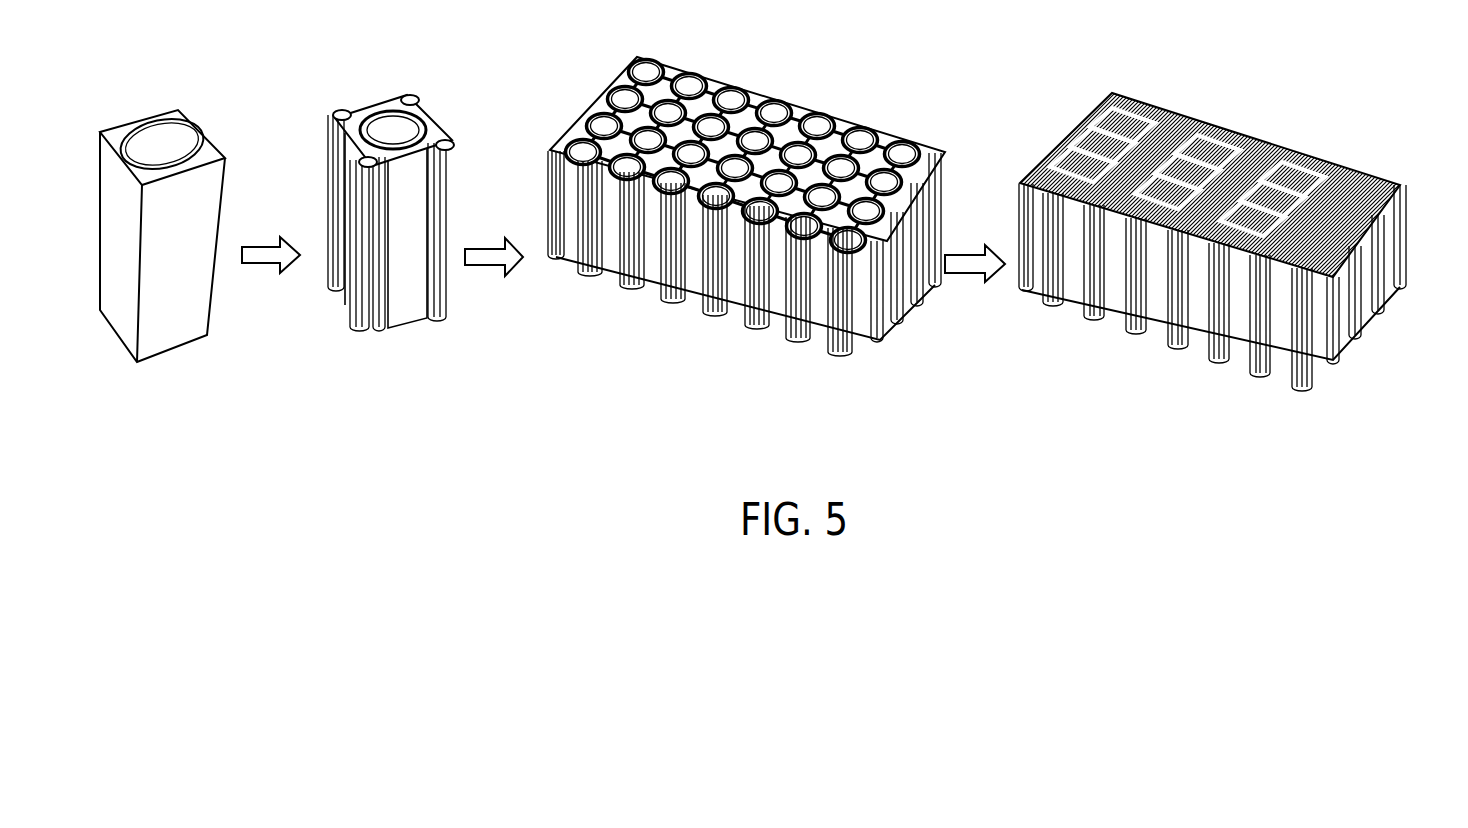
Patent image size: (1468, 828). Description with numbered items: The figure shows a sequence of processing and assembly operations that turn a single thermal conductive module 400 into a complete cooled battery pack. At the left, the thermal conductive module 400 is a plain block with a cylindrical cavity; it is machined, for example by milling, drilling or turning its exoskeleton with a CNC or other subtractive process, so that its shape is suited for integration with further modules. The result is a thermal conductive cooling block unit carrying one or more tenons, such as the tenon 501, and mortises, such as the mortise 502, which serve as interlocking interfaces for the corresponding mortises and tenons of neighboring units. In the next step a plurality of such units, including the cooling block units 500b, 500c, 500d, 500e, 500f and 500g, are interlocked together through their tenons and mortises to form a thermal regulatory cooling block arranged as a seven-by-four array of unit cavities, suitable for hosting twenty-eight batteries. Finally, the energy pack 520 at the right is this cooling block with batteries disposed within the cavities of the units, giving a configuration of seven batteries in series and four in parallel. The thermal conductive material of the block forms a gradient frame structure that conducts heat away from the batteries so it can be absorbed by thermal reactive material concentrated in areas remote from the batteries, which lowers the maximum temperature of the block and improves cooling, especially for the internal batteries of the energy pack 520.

The thermal conductive module 400 is at (187, 132).
The thermal conductive cooling block unit 500b is at (618, 270).
The thermal conductive cooling block unit 500c is at (660, 292).
The thermal conductive cooling block unit 500d is at (703, 303).
The thermal conductive cooling block unit 500e is at (745, 318).
The thermal conductive cooling block unit 500f is at (793, 330).
The thermal conductive cooling block unit 500g is at (833, 343).
The tenon 501 is at (413, 100).
The mortise 502 is at (437, 133).
The energy pack 520 is at (1228, 216).